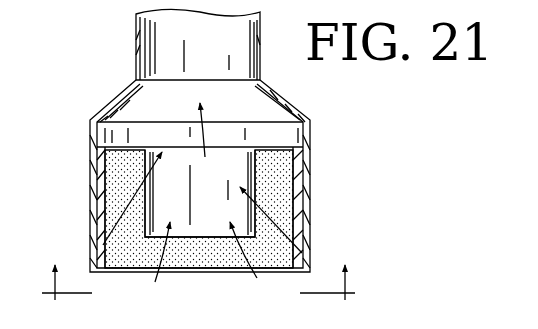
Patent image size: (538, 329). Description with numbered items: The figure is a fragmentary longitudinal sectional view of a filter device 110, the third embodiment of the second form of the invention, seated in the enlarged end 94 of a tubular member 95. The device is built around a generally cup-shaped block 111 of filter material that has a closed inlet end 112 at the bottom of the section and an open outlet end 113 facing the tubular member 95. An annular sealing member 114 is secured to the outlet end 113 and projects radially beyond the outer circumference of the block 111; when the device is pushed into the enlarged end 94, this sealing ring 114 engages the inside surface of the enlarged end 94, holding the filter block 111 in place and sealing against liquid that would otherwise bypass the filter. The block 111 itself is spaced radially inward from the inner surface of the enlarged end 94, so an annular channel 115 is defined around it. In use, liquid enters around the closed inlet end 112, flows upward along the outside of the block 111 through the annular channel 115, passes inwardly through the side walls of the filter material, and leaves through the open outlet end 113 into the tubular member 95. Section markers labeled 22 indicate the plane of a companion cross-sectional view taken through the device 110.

The filter device 110 is at (247, 161).
The tubular member 95 is at (135, 34).
The enlarged end 94 is at (90, 175).
The annular sealing member 114 is at (117, 148).
The annular channel 115 is at (100, 218).
The closed inlet end 112 is at (185, 267).
The open outlet end 113 is at (250, 165).
The block of filter material 111 is at (296, 228).
The section line 22 is at (201, 287).